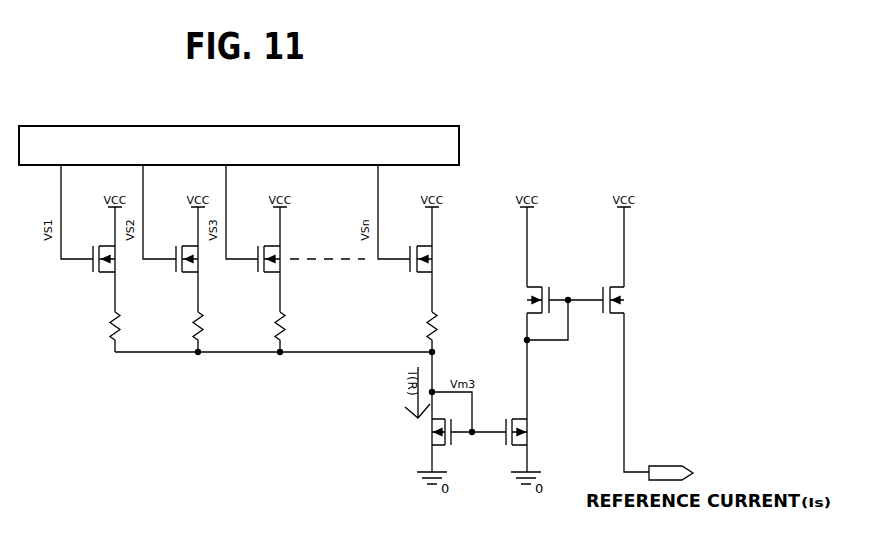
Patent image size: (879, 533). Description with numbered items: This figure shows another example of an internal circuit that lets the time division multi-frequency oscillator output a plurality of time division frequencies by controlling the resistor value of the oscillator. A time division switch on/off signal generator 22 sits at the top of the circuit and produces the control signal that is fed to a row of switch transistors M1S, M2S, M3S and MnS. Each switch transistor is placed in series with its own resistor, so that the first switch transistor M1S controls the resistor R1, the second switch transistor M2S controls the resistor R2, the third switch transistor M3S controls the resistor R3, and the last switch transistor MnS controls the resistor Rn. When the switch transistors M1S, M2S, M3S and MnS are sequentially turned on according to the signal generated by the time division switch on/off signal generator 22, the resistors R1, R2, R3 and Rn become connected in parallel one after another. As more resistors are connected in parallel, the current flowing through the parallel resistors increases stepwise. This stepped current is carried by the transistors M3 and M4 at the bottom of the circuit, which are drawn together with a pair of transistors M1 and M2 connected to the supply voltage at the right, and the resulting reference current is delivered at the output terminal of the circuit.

The time division switch on/off signal generator 22 is at (459, 147).
The switch transistor M1S is at (96, 259).
The switch transistor M2S is at (179, 259).
The switch transistor M3S is at (261, 259).
The switch transistor MnS is at (413, 259).
The resistor R1 is at (129, 332).
The resistor R2 is at (212, 332).
The resistor R3 is at (294, 332).
The resistor Rn is at (446, 332).
The current mirror transistor M1 is at (565, 260).
The current mirror transistor M2 is at (617, 339).
The transistor M3 is at (454, 440).
The transistor M4 is at (534, 392).